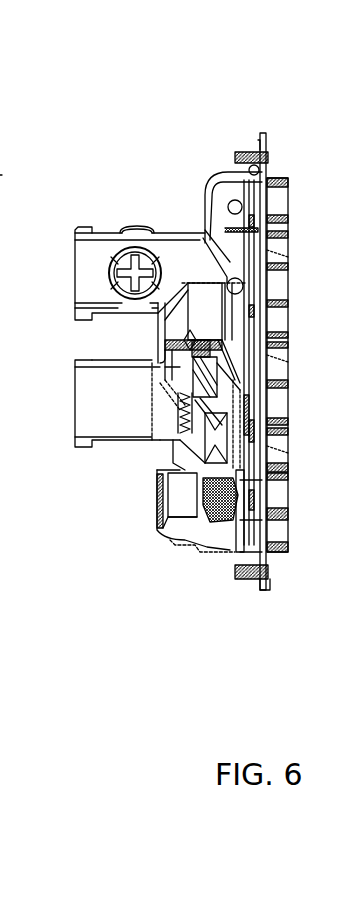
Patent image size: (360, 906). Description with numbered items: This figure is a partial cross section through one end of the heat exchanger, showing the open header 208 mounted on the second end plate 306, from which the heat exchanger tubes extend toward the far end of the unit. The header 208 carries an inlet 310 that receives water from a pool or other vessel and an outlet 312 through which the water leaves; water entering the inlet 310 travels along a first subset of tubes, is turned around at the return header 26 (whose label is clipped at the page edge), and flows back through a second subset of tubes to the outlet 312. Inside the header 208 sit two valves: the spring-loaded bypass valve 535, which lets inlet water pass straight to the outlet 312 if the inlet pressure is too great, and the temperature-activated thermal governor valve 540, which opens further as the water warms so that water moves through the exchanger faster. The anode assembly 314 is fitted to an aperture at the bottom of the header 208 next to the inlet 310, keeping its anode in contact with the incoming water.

The header 208 is at (203, 80).
The second end plate 306 is at (266, 135).
The inlet 310 is at (85, 245).
The outlet 312 is at (83, 388).
The anode assembly 314 is at (125, 225).
The bypass valve 535 is at (182, 418).
The thermal governor valve 540 is at (210, 523).
The return header 26 is at (12, 163).